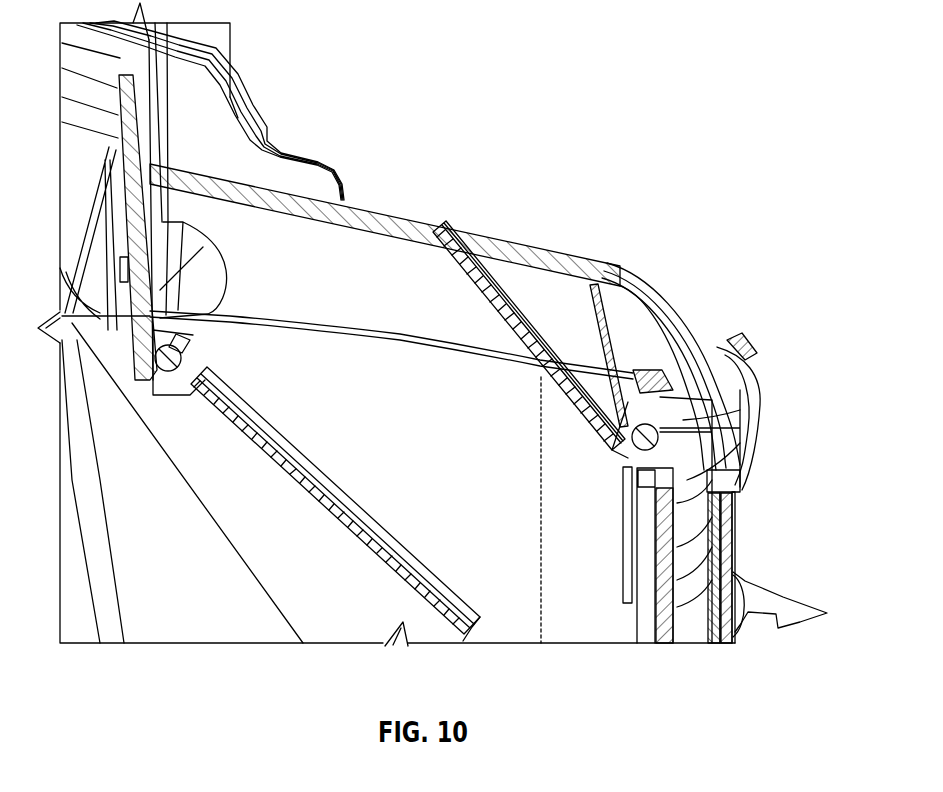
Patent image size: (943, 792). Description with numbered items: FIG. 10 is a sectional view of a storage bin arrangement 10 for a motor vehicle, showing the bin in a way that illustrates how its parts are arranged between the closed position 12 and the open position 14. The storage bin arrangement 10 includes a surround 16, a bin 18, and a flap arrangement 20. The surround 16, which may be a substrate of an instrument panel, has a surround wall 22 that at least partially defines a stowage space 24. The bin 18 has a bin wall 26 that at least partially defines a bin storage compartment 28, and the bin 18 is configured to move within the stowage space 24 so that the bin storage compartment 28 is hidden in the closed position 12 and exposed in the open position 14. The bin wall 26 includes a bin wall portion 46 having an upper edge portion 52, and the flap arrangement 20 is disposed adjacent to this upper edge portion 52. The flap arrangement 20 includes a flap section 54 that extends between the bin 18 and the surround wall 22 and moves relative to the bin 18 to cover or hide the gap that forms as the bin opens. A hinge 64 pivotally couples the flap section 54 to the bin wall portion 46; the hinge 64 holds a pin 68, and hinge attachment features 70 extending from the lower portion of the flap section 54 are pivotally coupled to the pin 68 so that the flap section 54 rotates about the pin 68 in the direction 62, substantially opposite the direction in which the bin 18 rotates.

The storage bin arrangement 10 is at (488, 50).
The closed position 12 is at (733, 536).
The open position 14 is at (353, 537).
The surround 16 is at (590, 264).
The bin 18 is at (463, 641).
The flap arrangement 20 is at (193, 48).
The surround wall 22 is at (362, 215).
The stowage space 24 is at (622, 312).
The bin wall 26 is at (268, 483).
The bin storage compartment 28 is at (350, 363).
The bin wall portion 46 is at (244, 441).
The upper edge portion 52 is at (746, 442).
The flap section 54 is at (205, 117).
The direction 62 is at (207, 64).
The hinge 64 is at (200, 330).
The pin 68 is at (190, 360).
The hinge attachment features 70 is at (150, 380).